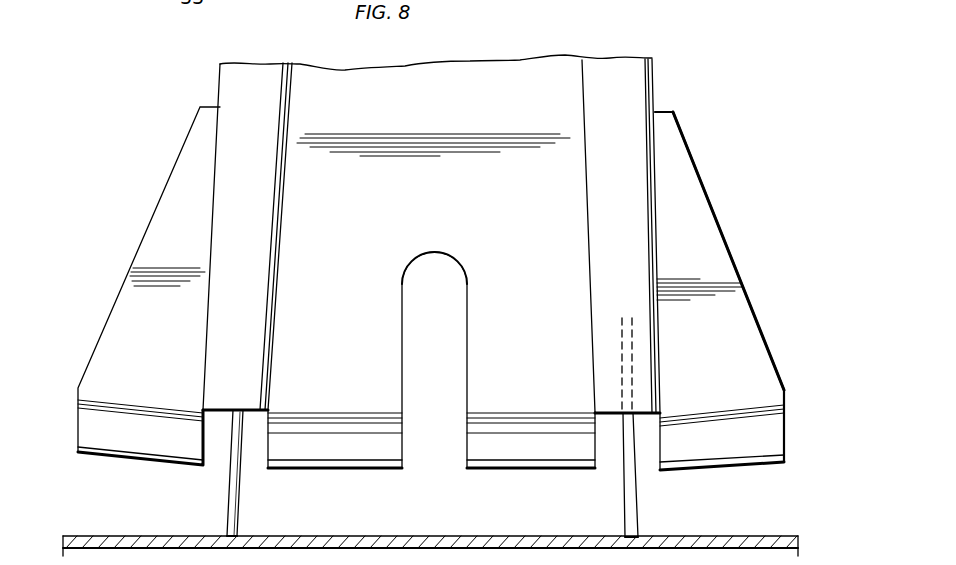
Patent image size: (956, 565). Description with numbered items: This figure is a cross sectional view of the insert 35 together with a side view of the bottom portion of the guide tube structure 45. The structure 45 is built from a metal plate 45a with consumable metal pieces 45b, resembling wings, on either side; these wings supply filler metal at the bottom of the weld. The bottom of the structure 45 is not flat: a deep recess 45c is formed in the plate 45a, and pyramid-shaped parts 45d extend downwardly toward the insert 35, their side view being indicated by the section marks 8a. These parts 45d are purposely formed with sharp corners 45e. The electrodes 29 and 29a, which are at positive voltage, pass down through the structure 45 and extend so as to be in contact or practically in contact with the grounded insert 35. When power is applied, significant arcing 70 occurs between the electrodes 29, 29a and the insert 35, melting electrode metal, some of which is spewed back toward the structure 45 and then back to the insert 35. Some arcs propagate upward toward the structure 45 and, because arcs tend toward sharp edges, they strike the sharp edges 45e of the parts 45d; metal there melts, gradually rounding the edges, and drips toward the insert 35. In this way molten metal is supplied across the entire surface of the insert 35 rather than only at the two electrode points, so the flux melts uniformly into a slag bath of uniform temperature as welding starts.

The guide tube structure 45 is at (656, 84).
The metal plate 45a is at (557, 170).
The consumable metal pieces 45b is at (160, 229).
The deep recess 45c is at (458, 267).
The pyramid-shaped parts 45d is at (96, 417).
The sharp corners 45e is at (96, 455).
The electrode 29 is at (227, 517).
The electrode 29a is at (639, 521).
The arcing 70 is at (238, 536).
The insert 35 is at (450, 545).
The section line 8a is at (492, 446).